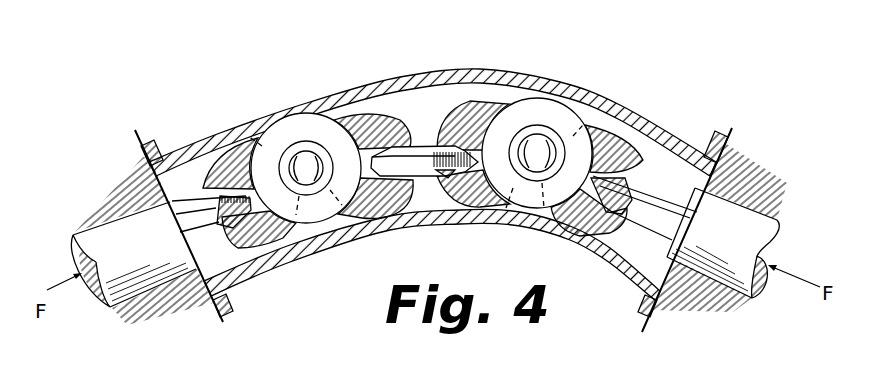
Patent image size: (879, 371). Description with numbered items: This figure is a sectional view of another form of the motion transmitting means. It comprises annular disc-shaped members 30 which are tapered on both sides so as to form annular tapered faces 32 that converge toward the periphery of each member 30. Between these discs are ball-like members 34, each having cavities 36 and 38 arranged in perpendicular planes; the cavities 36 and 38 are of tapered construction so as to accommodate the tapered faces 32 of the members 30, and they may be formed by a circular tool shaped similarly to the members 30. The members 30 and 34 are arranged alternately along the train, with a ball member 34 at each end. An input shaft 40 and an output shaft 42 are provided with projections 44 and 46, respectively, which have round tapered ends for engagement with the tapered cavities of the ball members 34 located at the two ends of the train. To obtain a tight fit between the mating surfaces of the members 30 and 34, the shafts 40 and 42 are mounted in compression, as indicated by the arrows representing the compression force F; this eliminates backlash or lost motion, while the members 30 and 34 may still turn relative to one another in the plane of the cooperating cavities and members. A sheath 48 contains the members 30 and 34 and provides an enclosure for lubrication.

The annular disc-shaped member 30 is at (320, 127).
The annular tapered face 32 is at (414, 152).
The ball-like member 34 is at (367, 123).
The cavity 36 is at (448, 148).
The cavity 38 is at (505, 123).
The input shaft 40 is at (770, 233).
The output shaft 42 is at (127, 270).
The projection 44 is at (642, 221).
The projection 46 is at (204, 221).
The sheath 48 is at (607, 97).